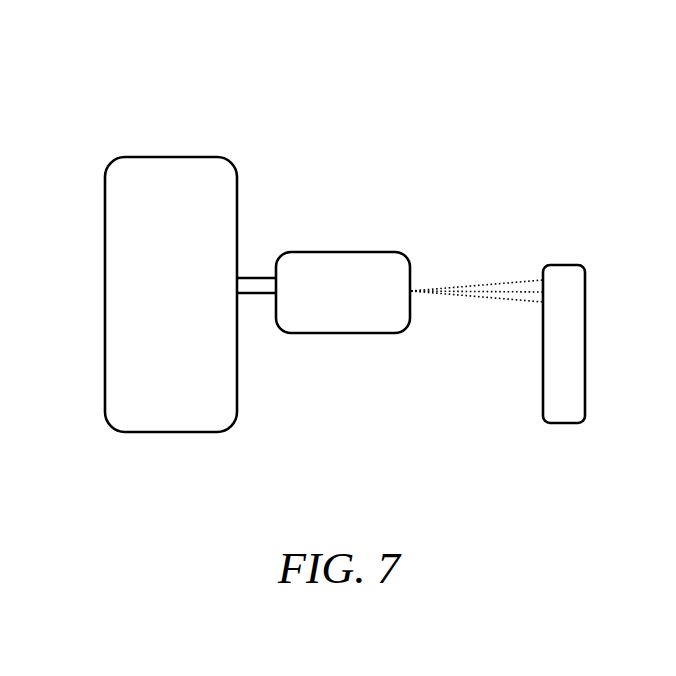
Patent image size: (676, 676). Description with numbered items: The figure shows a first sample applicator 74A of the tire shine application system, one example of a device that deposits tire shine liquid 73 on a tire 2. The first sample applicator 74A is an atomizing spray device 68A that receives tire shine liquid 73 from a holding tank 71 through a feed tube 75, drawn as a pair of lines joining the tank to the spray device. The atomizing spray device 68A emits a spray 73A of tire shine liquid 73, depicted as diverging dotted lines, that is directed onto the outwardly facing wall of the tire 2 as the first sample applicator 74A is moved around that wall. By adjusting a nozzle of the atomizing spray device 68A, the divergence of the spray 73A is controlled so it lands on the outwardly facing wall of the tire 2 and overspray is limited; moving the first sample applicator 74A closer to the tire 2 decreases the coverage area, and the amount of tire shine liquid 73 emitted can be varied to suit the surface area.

The holding tank 71 is at (208, 158).
The tire shine liquid 73 is at (172, 404).
The feed tube 75 is at (255, 278).
The atomizing spray device 68A is at (382, 253).
The spray 73A is at (462, 262).
The first sample applicator 74A is at (458, 159).
The tire 2 is at (560, 266).